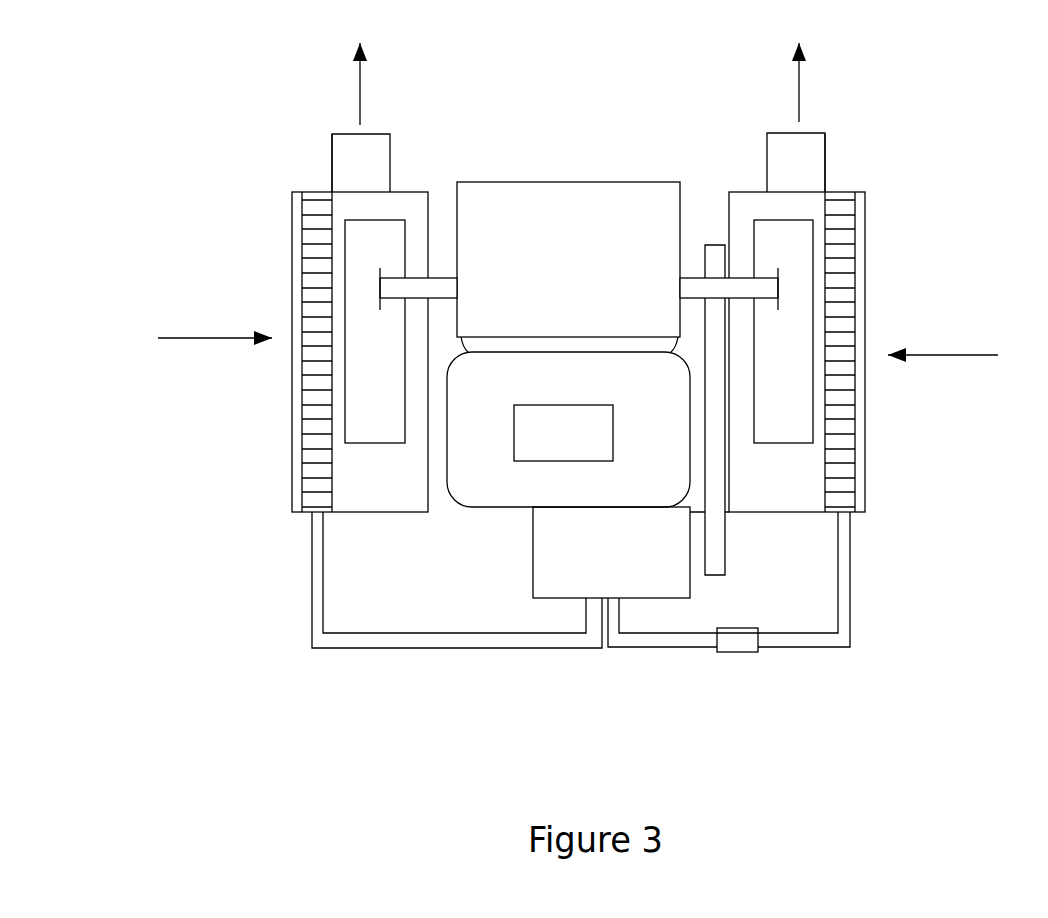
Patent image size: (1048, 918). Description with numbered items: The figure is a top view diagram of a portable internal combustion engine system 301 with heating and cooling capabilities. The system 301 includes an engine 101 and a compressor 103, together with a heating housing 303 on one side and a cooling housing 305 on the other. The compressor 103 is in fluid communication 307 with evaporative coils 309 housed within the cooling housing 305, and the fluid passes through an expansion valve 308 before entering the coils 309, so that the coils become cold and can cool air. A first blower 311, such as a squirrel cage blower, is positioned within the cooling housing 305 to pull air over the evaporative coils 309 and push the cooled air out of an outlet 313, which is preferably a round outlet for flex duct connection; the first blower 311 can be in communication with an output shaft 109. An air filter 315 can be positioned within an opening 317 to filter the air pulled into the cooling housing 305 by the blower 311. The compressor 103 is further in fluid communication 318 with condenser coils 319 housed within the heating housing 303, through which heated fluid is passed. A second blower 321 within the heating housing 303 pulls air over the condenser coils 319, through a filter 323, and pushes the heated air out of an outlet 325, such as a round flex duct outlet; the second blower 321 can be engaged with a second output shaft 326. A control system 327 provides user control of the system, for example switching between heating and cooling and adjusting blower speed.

The system 301 is at (124, 100).
The engine 101 is at (550, 137).
The compressor 103 is at (533, 558).
The output shaft 109 is at (693, 278).
The heating housing 303 is at (405, 192).
The cooling housing 305 is at (742, 192).
The fluid communication 307 is at (848, 597).
The expansion valve 308 is at (733, 652).
The evaporative coils 309 is at (858, 222).
The first blower 311 is at (858, 413).
The outlet 313 is at (826, 157).
The air filter 315 is at (865, 300).
The opening 317 is at (900, 477).
The fluid communication 318 is at (312, 580).
The condenser coils 319 is at (303, 483).
The second blower 321 is at (345, 428).
The filter 323 is at (292, 280).
The outlet 325 is at (332, 158).
The second output shaft 326 is at (446, 278).
The control system 327 is at (575, 405).